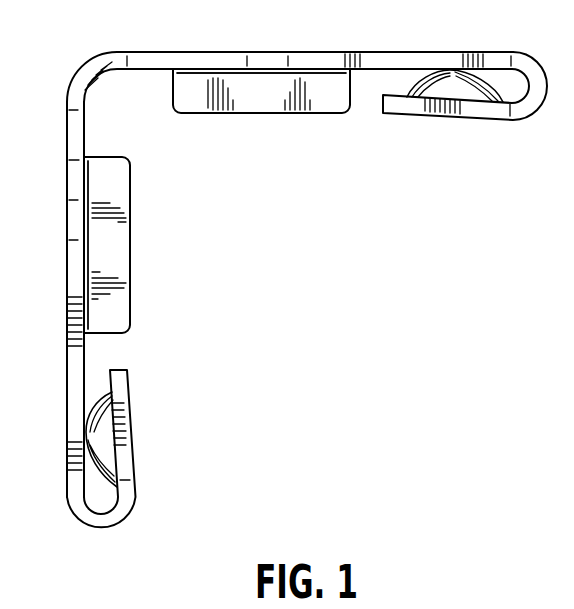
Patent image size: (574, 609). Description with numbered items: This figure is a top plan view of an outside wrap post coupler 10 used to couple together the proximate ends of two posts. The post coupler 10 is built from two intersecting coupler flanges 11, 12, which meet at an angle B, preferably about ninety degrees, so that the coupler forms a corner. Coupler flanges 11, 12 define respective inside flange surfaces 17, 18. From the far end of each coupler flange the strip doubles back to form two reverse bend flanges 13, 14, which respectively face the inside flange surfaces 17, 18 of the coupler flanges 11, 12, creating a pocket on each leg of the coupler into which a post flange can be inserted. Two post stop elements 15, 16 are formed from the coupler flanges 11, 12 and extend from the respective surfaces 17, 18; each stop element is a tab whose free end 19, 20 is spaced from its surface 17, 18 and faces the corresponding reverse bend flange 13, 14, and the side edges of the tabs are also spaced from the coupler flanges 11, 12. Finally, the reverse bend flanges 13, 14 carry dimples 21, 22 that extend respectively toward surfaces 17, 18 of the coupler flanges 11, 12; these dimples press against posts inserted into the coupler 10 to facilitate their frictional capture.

The post coupler 10 is at (351, 318).
The coupler flange 11 is at (70, 389).
The coupler flange 12 is at (402, 60).
The reverse bend flange 13 is at (128, 471).
The reverse bend flange 14 is at (489, 116).
The post stop element 15 is at (120, 256).
The post stop element 16 is at (268, 106).
The inside flange surface 17 is at (86, 351).
The inside flange surface 18 is at (366, 71).
The free end 19 is at (130, 196).
The free end 20 is at (216, 114).
The dimple 21 is at (95, 440).
The dimple 22 is at (456, 78).